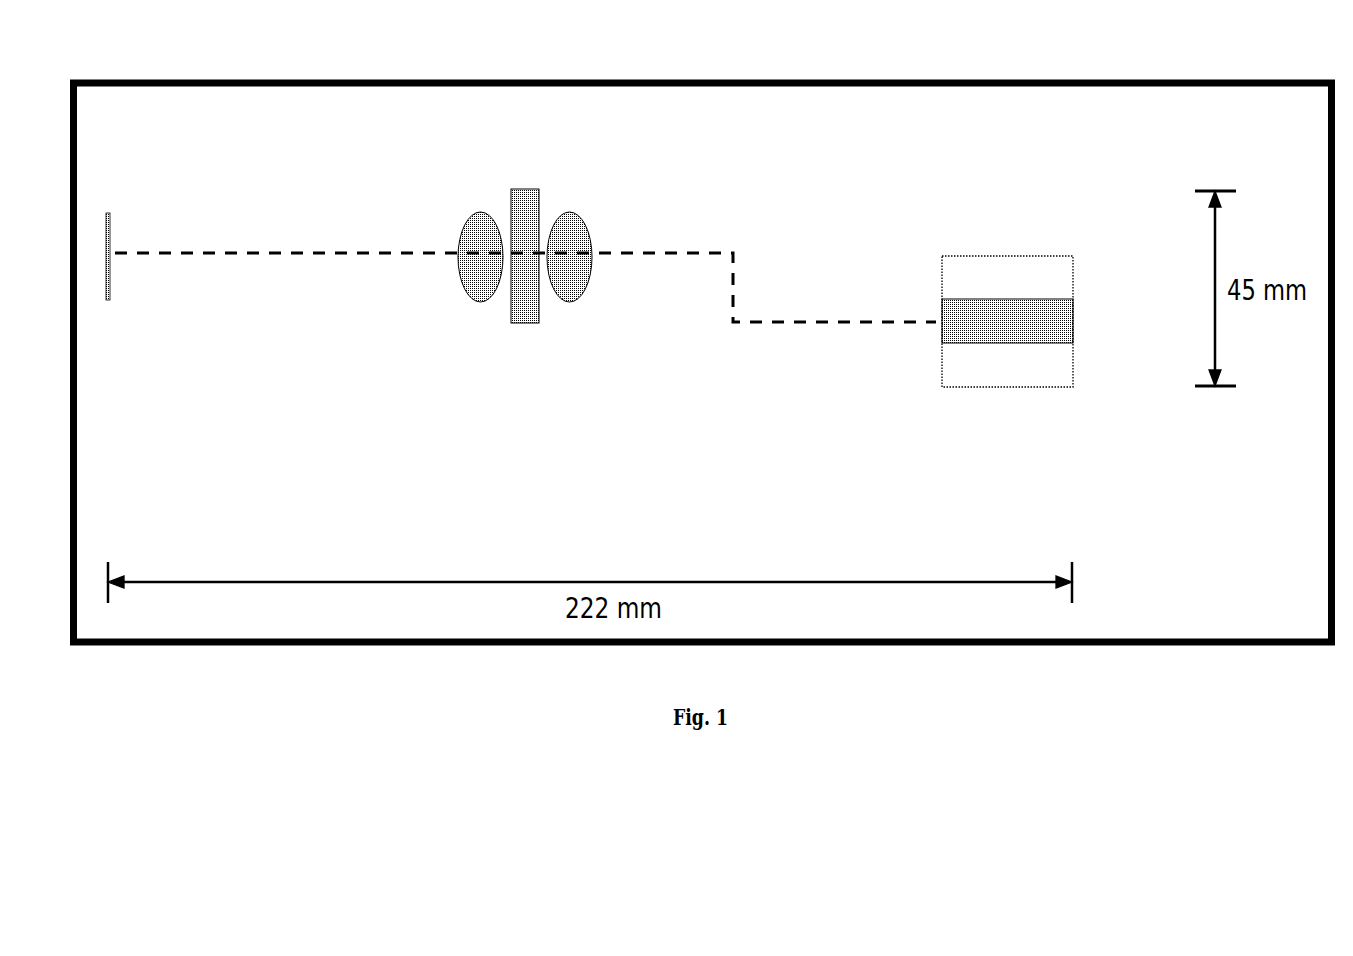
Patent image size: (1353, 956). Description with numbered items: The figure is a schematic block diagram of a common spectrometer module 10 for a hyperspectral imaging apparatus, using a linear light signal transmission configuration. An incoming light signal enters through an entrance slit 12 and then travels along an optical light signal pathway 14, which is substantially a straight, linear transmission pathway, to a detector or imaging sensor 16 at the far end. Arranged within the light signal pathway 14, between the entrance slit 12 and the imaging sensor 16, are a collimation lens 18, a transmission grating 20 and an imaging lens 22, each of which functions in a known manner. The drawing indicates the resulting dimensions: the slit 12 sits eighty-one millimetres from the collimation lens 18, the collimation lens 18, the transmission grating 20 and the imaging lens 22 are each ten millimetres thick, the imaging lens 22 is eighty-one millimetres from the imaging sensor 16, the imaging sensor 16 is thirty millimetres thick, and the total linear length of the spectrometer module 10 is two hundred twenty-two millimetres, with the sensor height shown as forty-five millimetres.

The spectrometer module 10 is at (203, 79).
The entrance slit 12 is at (108, 213).
The optical light signal pathway 14 is at (308, 253).
The imaging sensor 16 is at (1020, 263).
The collimation lens 18 is at (478, 212).
The transmission grating 20 is at (525, 310).
The imaging lens 22 is at (572, 212).